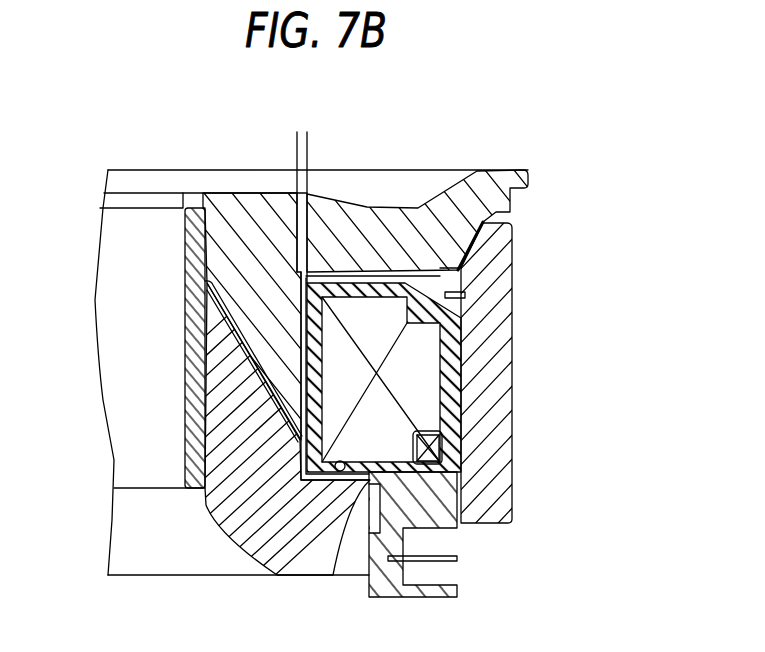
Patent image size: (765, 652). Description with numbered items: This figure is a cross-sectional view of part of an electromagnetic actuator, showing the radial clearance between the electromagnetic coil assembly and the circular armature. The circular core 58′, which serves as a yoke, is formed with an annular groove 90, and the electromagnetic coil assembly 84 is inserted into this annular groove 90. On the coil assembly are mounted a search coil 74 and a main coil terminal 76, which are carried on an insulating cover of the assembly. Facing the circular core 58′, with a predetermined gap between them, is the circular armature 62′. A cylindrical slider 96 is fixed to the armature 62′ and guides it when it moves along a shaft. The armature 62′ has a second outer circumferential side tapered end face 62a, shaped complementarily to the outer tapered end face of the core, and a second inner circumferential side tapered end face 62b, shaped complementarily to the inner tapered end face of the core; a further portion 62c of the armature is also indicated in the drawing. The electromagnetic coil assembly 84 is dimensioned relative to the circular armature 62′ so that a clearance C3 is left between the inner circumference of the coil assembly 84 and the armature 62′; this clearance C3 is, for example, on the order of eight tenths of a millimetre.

The circular armature 62′ is at (386, 210).
The second outer circumferential side tapered end face 62a is at (472, 245).
The second inner circumferential side tapered end face 62b is at (237, 330).
The housing plate portion 62c is at (303, 373).
The cylindrical slider 96 is at (183, 268).
The circular core 58′ is at (240, 528).
The electromagnetic coil assembly 84 is at (425, 377).
The search coil 74 is at (433, 450).
The main coil terminal 76 is at (450, 562).
The annular groove 90 is at (338, 575).
The clearance C3 is at (347, 139).